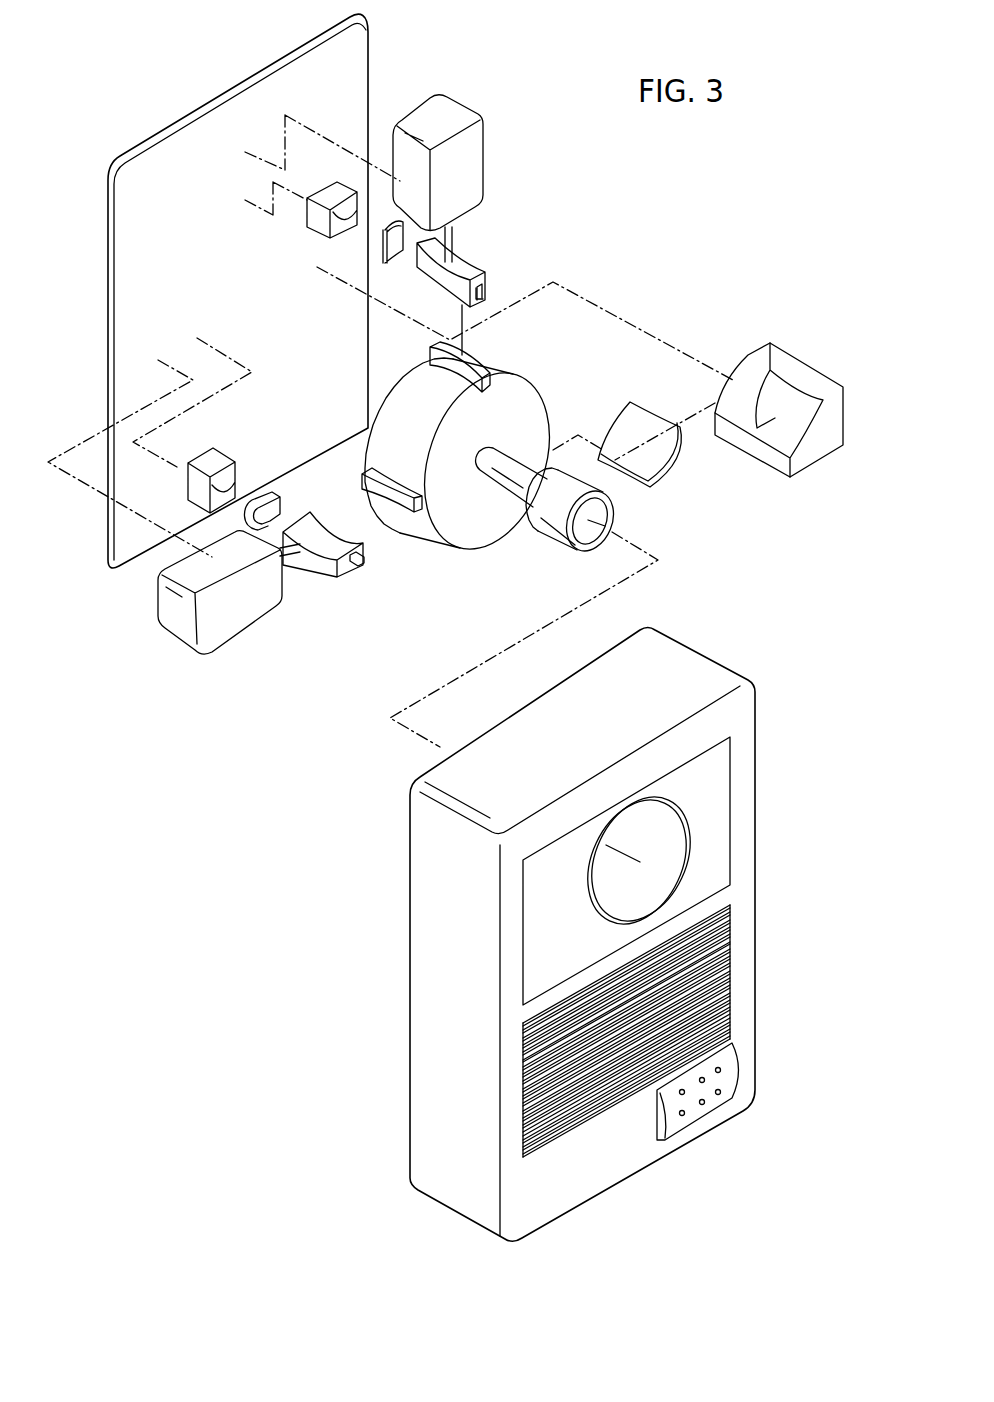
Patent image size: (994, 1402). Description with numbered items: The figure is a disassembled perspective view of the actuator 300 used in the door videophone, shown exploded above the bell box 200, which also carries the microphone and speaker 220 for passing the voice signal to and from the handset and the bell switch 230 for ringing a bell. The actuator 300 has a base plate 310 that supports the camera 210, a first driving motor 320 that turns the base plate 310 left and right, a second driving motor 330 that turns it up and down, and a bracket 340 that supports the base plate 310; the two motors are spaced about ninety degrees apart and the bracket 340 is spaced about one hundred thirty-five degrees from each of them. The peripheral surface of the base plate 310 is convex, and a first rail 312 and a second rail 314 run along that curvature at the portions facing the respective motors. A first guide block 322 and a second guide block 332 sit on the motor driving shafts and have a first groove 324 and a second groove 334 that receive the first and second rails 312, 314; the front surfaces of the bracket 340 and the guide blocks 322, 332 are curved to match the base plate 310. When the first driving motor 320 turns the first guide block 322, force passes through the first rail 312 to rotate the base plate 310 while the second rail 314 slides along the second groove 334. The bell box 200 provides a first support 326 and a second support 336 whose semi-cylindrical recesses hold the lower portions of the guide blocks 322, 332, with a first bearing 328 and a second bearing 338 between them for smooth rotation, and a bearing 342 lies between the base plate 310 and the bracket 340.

The bell box 200 is at (750, 670).
The camera 210 is at (553, 527).
The microphone and speaker 220 is at (732, 982).
The bell switch 230 is at (732, 1078).
The actuator 300 is at (684, 241).
The base plate 310 is at (452, 520).
The first rail 312 is at (520, 364).
The second rail 314 is at (385, 503).
The first driving motor 320 is at (452, 110).
The first guide block 322 is at (463, 268).
The first groove 324 is at (478, 302).
The first support 326 is at (312, 208).
The first bearing 328 is at (383, 245).
The second driving motor 330 is at (218, 625).
The second guide block 332 is at (323, 558).
The second groove 334 is at (360, 560).
The second support 336 is at (215, 460).
The second bearing 338 is at (265, 510).
The bracket 340 is at (775, 360).
The bearing 342 is at (650, 470).